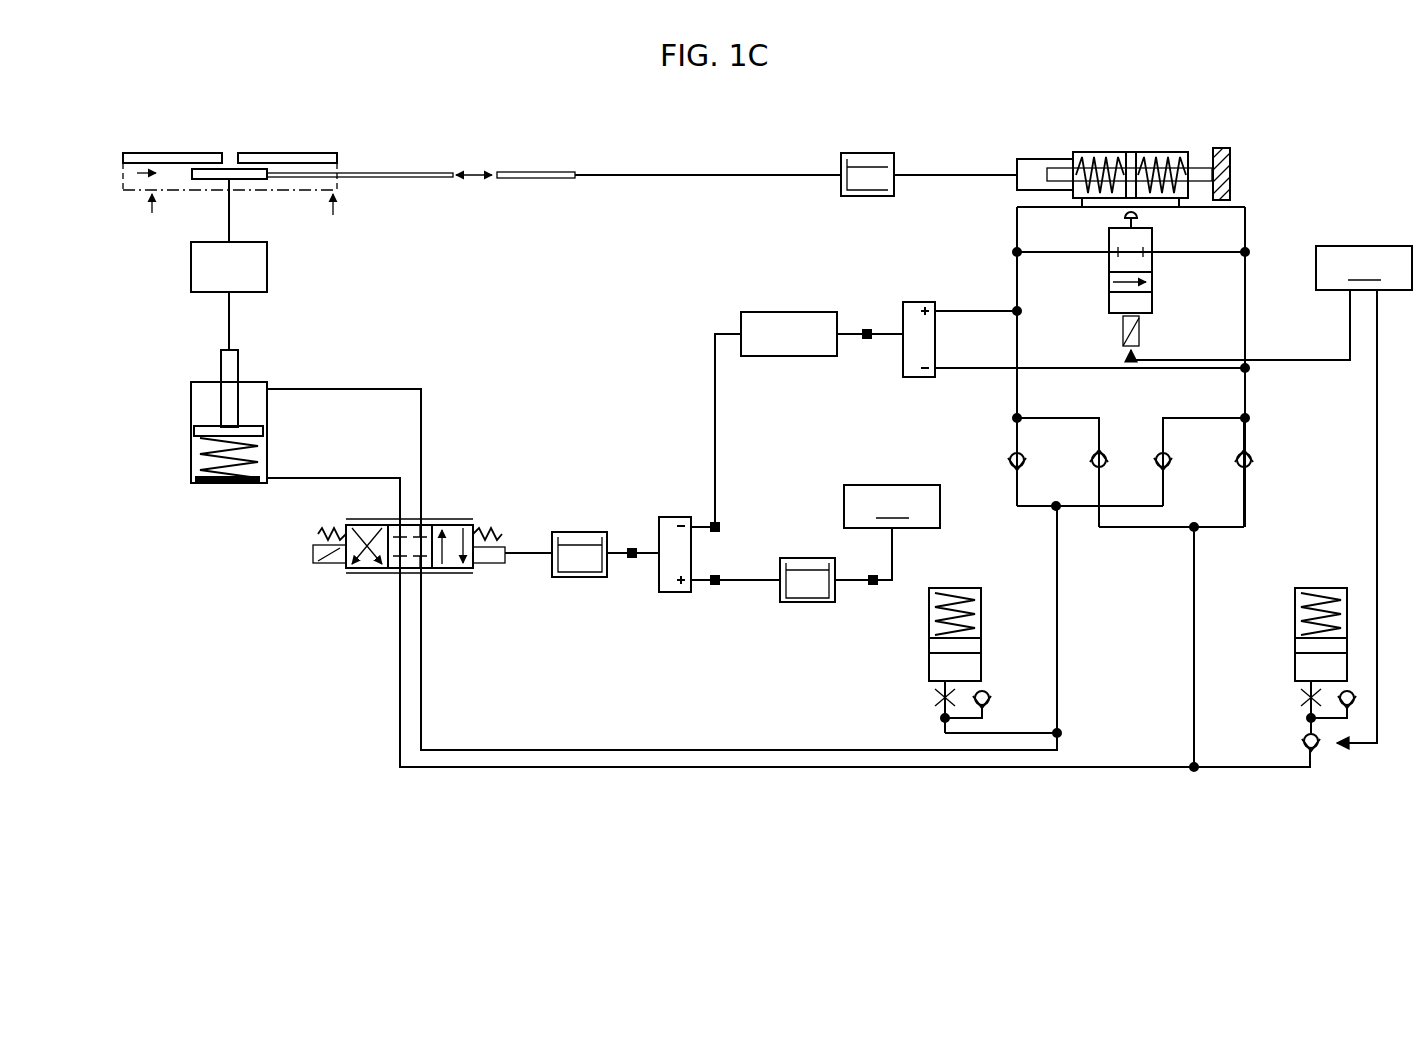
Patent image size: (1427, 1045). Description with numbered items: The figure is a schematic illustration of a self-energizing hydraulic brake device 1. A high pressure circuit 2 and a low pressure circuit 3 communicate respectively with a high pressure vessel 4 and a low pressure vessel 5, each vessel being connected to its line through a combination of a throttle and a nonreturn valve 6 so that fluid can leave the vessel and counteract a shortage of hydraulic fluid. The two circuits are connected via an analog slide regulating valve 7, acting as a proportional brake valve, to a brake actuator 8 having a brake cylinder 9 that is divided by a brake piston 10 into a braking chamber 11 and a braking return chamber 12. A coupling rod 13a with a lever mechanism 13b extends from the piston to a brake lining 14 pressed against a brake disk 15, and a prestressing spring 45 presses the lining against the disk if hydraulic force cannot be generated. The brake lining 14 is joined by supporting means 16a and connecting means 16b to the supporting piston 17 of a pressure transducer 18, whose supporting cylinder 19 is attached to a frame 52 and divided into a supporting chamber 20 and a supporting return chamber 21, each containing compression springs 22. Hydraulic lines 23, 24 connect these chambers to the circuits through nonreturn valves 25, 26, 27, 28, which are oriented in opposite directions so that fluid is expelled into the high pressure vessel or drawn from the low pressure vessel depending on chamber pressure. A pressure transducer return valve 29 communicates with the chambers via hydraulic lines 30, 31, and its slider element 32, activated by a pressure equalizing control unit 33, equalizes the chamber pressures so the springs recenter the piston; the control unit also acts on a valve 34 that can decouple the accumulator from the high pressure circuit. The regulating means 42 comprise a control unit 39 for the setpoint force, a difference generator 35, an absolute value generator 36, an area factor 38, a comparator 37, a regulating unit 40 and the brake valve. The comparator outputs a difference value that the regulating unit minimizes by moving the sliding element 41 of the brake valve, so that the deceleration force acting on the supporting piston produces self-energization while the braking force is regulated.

The device 1 is at (1077, 790).
The high pressure circuit 2 is at (702, 768).
The low pressure circuit 3 is at (615, 748).
The high pressure vessel 4 is at (1295, 598).
The low pressure vessel 5 is at (928, 598).
The combination of a throttle and a nonreturn valve 6 is at (930, 693).
The analog slide regulating valve 7 is at (338, 577).
The brake actuator 8 is at (190, 492).
The brake cylinder 9 is at (260, 484).
The brake piston 10 is at (263, 431).
The braking chamber 11 is at (191, 470).
The braking return chamber 12 is at (191, 414).
The coupling rod 13a is at (233, 394).
The lever mechanism 13b is at (267, 262).
The brake lining 14 is at (229, 168).
The brake disk 15 is at (318, 158).
The supporting means 16a is at (520, 172).
The connecting means 16b is at (858, 153).
The supporting piston 17 is at (1130, 152).
The pressure transducer 18 is at (1216, 141).
The supporting cylinder 19 is at (1078, 152).
The supporting chamber 20 is at (1170, 152).
The supporting return chamber 21 is at (1078, 158).
The compression springs 22 is at (1083, 200).
The hydraulic line 23 is at (1247, 392).
The hydraulic line 24 is at (1015, 392).
The nonreturn valve 25 is at (1006, 452).
The nonreturn valve 26 is at (1090, 457).
The nonreturn valve 27 is at (1172, 458).
The nonreturn valve 28 is at (1252, 465).
The pressure transducer return valve 29 is at (1153, 275).
The hydraulic line 30 is at (1213, 250).
The hydraulic line 31 is at (1062, 253).
The slider element 32 is at (1140, 322).
The pressure equalizing control unit 33 is at (1271, 494).
The valve 34 is at (1300, 738).
The difference generator 35 is at (910, 302).
The absolute value generator 36 is at (763, 312).
The comparator 37 is at (665, 593).
The area factor 38 is at (796, 603).
The control unit 39 is at (892, 506).
The regulating unit 40 is at (569, 578).
The sliding element 41 is at (486, 564).
The regulating means 42 is at (563, 488).
The prestressing spring 45 is at (215, 484).
The frame 52 is at (1228, 188).